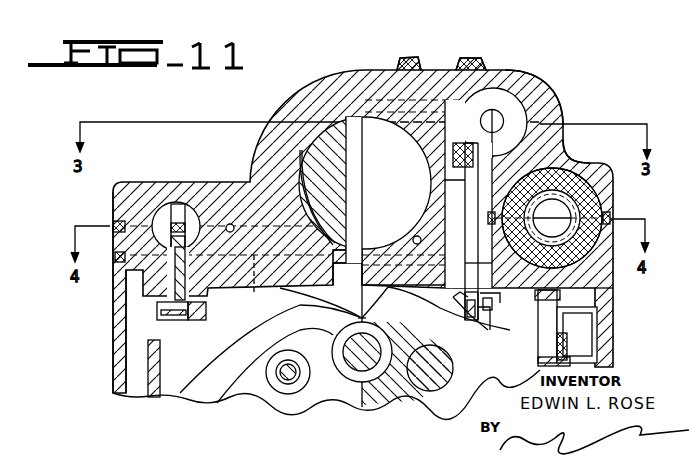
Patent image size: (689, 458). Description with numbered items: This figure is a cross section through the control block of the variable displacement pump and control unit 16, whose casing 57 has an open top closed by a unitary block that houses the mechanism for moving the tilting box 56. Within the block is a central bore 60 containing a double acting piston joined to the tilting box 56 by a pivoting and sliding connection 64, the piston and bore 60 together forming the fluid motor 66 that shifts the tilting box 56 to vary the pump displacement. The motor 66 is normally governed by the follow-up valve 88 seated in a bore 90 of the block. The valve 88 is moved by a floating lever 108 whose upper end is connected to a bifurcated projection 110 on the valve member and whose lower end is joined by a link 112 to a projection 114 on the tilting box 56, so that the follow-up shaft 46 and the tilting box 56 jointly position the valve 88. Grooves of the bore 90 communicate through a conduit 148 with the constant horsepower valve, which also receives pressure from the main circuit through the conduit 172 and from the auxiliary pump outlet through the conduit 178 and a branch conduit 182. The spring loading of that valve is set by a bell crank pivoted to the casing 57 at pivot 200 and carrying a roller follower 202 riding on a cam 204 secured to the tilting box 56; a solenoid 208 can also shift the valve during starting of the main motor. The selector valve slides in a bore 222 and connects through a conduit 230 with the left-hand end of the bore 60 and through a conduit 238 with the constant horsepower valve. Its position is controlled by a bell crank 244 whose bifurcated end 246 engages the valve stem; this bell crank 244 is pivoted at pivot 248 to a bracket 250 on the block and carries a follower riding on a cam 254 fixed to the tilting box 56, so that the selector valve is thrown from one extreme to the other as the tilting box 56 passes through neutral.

The variable displacement pump and control unit 16 is at (398, 402).
The follow-up shaft 46 is at (462, 152).
The tilting box 56 is at (381, 358).
The casing 57 is at (113, 318).
The bore 60 is at (372, 262).
The pivoting and sliding connection 64 is at (357, 212).
The fluid motor 66 is at (330, 202).
The follow-up valve 88 is at (502, 98).
The bore 90 is at (528, 99).
The floating lever 108 is at (473, 263).
The bifurcated projection 110 is at (503, 118).
The link 112 is at (492, 308).
The projection 114 is at (462, 314).
The conduit 148 is at (560, 160).
The conduit 172 is at (413, 238).
The conduit 178 is at (394, 108).
The branch conduit 182 is at (612, 218).
The pivot 200 is at (530, 326).
The roller follower 202 is at (560, 343).
The cam 204 is at (573, 317).
The solenoid 208 is at (587, 243).
The bore 222 is at (160, 213).
The conduit 230 is at (227, 223).
The conduit 238 is at (239, 283).
The bell crank 244 is at (157, 296).
The bifurcated end 246 is at (175, 212).
The pivot 248 is at (178, 322).
The bracket 250 is at (213, 304).
The cam 254 is at (155, 398).